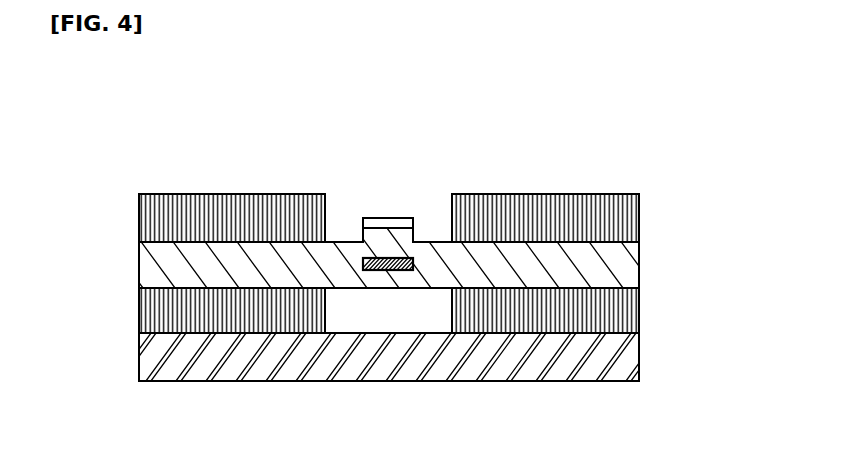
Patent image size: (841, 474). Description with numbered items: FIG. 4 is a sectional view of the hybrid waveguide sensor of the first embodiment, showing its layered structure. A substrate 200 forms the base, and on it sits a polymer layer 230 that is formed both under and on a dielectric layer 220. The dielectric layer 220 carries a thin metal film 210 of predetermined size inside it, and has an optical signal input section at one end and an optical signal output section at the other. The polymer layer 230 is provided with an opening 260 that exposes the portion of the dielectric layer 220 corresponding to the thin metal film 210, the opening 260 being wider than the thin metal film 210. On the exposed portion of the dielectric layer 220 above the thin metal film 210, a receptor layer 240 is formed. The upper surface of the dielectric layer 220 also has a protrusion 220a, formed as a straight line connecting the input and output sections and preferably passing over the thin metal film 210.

The substrate 200 is at (633, 357).
The thin metal film 210 is at (382, 270).
The dielectric layer 220 is at (632, 262).
The protrusion 220a is at (412, 233).
The polymer layer 230 is at (142, 220).
The receptor layer 240 is at (397, 218).
The opening 260 is at (340, 310).